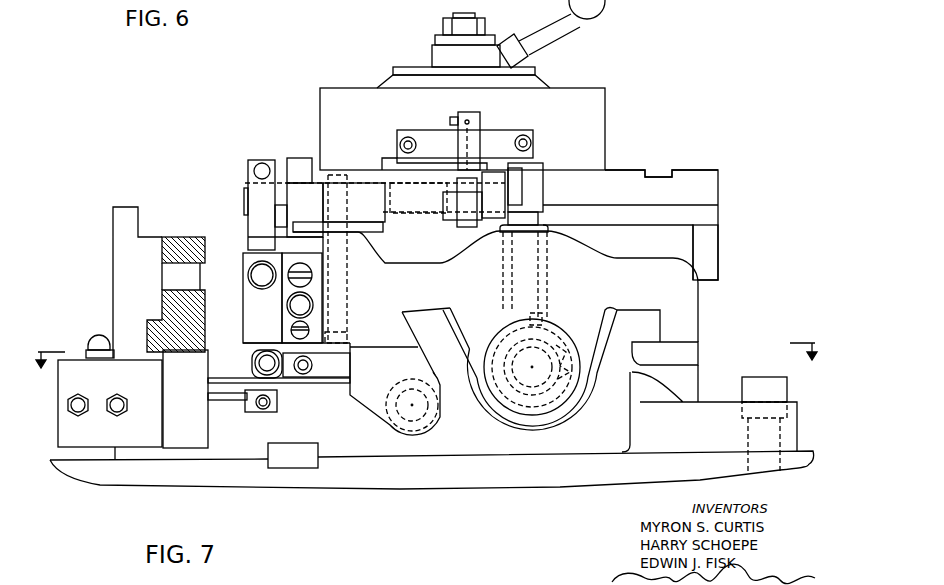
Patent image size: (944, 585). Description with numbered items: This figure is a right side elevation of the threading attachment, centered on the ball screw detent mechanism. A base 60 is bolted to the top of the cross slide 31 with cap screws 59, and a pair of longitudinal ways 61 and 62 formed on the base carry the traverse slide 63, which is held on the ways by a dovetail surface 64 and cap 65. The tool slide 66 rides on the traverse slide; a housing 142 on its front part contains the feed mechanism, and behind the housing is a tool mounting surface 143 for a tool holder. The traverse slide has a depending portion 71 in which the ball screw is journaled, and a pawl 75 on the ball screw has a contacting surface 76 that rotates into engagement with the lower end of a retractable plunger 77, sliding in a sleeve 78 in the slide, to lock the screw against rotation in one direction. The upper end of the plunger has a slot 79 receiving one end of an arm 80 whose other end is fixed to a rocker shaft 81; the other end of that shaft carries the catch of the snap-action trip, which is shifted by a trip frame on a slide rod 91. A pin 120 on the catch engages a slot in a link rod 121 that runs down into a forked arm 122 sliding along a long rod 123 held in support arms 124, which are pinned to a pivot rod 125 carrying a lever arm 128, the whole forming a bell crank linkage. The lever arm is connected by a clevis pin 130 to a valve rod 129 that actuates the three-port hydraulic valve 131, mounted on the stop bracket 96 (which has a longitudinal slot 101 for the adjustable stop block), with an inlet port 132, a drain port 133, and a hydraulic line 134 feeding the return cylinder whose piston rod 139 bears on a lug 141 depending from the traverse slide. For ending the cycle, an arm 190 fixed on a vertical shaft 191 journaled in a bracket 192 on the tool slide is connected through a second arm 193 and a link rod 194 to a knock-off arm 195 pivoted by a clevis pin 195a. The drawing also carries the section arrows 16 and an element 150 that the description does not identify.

The handle 150 is at (537, 35).
The housing 142 is at (605, 96).
The tool mounting surface 143 is at (688, 170).
The arm 190 is at (452, 120).
The vertical shaft 191 is at (476, 113).
The bracket 192 is at (521, 130).
The second arm 193 is at (447, 163).
The link rod 194 is at (405, 184).
The knock-off arm 195 is at (373, 233).
The clevis pin 195a is at (468, 226).
The pin 120 is at (328, 175).
The link rod 121 is at (348, 283).
The forked arm 122 is at (352, 362).
The long rod 123 is at (305, 374).
The support arms 124 is at (290, 378).
The pivot rod 125 is at (256, 366).
The lever arm 128 is at (275, 411).
The valve rod 129 is at (219, 404).
The clevis pin 130 is at (262, 411).
The three-port hydraulic valve 131 is at (110, 410).
The inlet port 132 is at (90, 382).
The drain port 133 is at (114, 396).
The hydraulic line 134 is at (102, 333).
The rod 139 is at (403, 398).
The lug 141 is at (367, 400).
The arm 80 is at (517, 181).
The slot 79 is at (522, 191).
The tool slide 66 is at (660, 186).
The rocker shaft 81 is at (245, 201).
The stop bracket 96 is at (118, 271).
The longitudinal slot 101 is at (173, 287).
The slide rod 91 is at (290, 310).
The retractable plunger 77 is at (520, 287).
The sleeve 78 is at (548, 268).
The contacting surface 76 is at (563, 337).
The pawl 75 is at (580, 398).
The depending portion 71 is at (492, 402).
The longitudinal way 62 is at (408, 315).
The dovetail surface 64 is at (408, 328).
The longitudinal way 61 is at (642, 308).
The traverse slide 63 is at (700, 301).
The cap 65 is at (694, 351).
The base 60 is at (717, 405).
The cap screws 59 is at (762, 380).
The cross slide 31 is at (367, 485).
The section line 16 is at (426, 345).